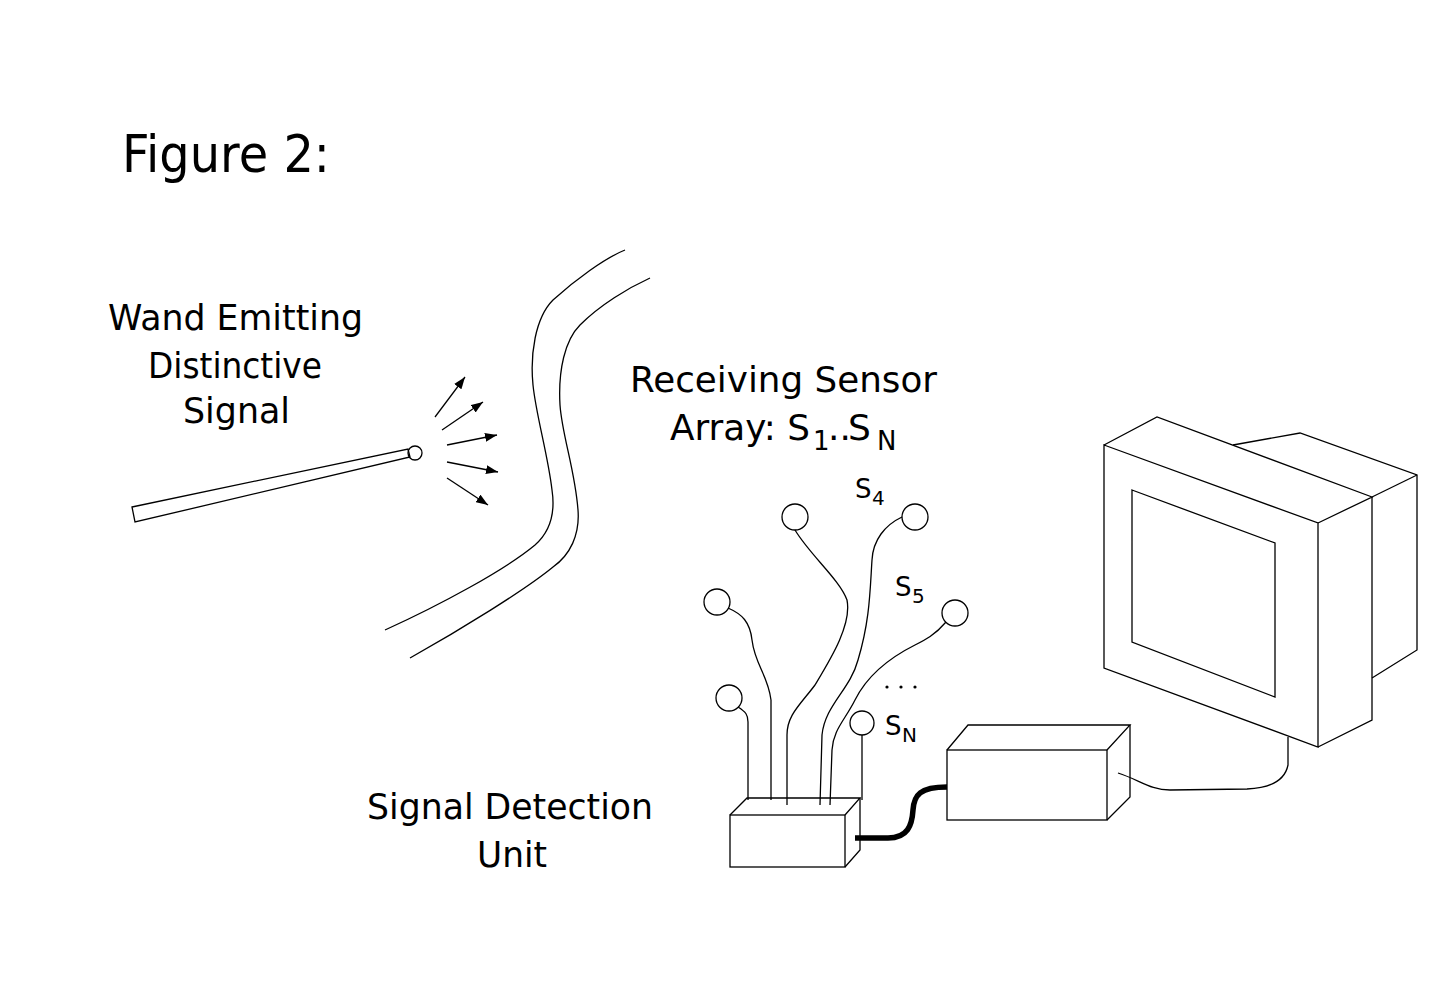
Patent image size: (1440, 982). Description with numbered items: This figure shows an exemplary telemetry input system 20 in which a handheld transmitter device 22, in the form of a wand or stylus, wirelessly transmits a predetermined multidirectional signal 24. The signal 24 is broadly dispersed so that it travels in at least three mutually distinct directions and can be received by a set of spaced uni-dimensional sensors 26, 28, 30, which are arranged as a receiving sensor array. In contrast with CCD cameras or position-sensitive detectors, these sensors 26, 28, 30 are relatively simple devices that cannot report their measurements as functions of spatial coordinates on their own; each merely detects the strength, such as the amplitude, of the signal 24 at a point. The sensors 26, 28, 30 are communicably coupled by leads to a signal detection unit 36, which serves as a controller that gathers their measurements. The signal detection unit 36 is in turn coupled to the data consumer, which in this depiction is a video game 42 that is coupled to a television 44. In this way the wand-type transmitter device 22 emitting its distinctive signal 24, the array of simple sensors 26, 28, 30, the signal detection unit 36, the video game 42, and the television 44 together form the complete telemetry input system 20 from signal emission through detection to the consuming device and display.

The telemetry input system 20 is at (767, 227).
The transmitter device 22 is at (197, 523).
The signal 24 is at (472, 368).
The uni-dimensional sensor 26 is at (722, 727).
The uni-dimensional sensor 28 is at (712, 575).
The uni-dimensional sensor 30 is at (788, 495).
The signal detection unit 36 is at (796, 856).
The video game 42 is at (1039, 799).
The television 44 is at (1209, 601).